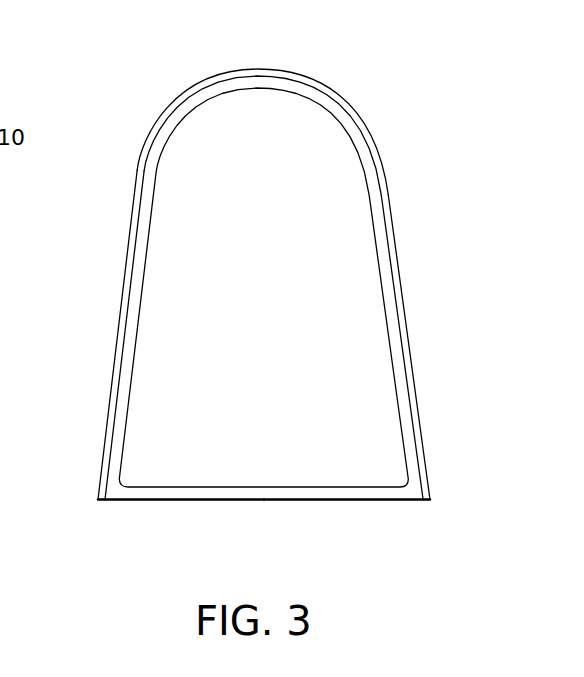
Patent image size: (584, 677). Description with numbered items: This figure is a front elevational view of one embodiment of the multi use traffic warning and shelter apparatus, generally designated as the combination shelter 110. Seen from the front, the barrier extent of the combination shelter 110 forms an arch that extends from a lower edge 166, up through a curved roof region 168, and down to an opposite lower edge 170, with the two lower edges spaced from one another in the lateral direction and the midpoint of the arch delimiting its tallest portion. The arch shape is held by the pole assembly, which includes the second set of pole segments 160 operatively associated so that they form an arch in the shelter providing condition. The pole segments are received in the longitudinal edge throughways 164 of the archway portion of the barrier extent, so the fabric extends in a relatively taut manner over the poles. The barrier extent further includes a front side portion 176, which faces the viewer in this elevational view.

The combination shelter 110 is at (276, 302).
The second set of pole segments 160 is at (105, 412).
The longitudinal edge throughways 164 is at (402, 307).
The lower edge 166 is at (432, 498).
The curved roof region 168 is at (286, 80).
The opposite lower edge 170 is at (98, 500).
The front side portion 176 is at (372, 466).